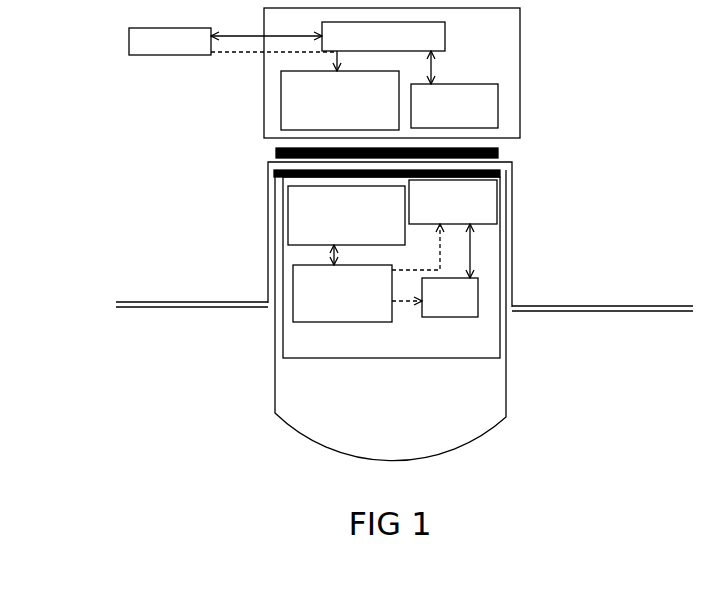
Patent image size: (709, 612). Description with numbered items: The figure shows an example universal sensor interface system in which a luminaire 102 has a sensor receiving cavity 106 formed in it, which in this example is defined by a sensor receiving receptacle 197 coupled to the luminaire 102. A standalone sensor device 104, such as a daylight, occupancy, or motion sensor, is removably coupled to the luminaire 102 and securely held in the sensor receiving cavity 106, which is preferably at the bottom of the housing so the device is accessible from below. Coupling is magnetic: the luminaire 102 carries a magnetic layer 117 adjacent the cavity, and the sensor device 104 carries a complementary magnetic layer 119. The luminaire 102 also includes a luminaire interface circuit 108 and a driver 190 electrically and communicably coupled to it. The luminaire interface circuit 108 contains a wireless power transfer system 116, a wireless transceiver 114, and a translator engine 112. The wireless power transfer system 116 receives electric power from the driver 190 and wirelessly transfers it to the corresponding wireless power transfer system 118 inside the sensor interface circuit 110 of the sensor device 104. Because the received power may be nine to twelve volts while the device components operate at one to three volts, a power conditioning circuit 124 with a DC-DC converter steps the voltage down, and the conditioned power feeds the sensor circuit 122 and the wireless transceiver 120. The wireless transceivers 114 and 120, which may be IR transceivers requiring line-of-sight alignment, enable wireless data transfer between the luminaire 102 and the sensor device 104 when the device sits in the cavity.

The luminaire 102 is at (404, 289).
The sensor device 104 is at (390, 315).
The sensor receiving cavity 106 is at (265, 167).
The luminaire interface circuit 108 is at (392, 73).
The sensor interface circuit 110 is at (391, 267).
The translator engine 112 is at (383, 36).
The wireless transceiver 114 is at (454, 106).
The wireless power transfer system 116 is at (340, 100).
The magnetic layer 117 is at (500, 155).
The wireless power transfer system 118 is at (346, 215).
The complementary magnetic layer 119 is at (512, 175).
The wireless transceiver 120 is at (453, 202).
The sensor circuit 122 is at (450, 297).
The power conditioning circuit 124 is at (342, 293).
The driver 190 is at (170, 41).
The sensor receiving receptacle 197 is at (265, 243).